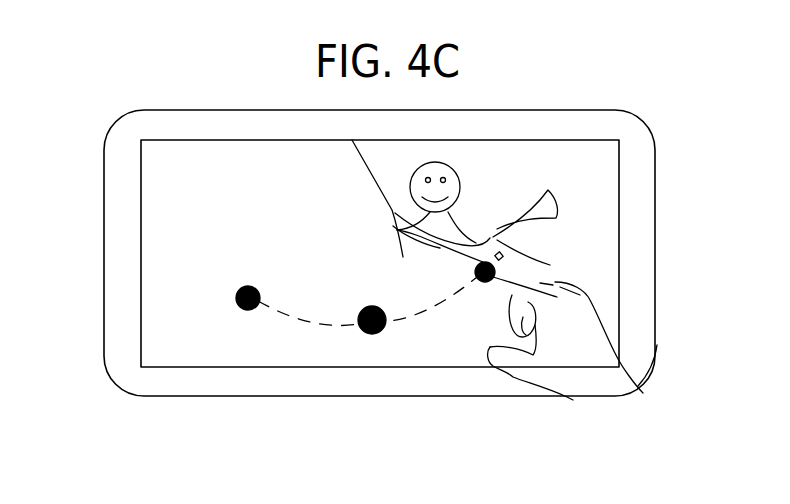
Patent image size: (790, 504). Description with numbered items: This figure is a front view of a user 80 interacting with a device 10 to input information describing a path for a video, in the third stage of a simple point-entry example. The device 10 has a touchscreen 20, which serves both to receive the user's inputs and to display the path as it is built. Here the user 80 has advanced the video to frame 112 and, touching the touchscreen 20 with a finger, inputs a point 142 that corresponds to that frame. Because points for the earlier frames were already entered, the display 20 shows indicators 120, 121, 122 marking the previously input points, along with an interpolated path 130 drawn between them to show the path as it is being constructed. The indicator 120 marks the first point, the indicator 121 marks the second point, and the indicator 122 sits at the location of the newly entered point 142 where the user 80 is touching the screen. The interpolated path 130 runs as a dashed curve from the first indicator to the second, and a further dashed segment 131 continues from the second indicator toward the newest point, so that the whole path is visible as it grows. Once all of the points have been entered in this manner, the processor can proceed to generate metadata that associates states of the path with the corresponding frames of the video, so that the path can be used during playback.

The device 10 is at (84, 187).
The frame 112 is at (212, 167).
The touchscreen 20 is at (512, 160).
The point 142 is at (487, 257).
The indicator 122 is at (495, 272).
The user 80 is at (592, 347).
The indicator 120 is at (245, 310).
The indicator 121 is at (368, 334).
The interpolated path 130 is at (303, 311).
The second path segment 131 is at (433, 303).